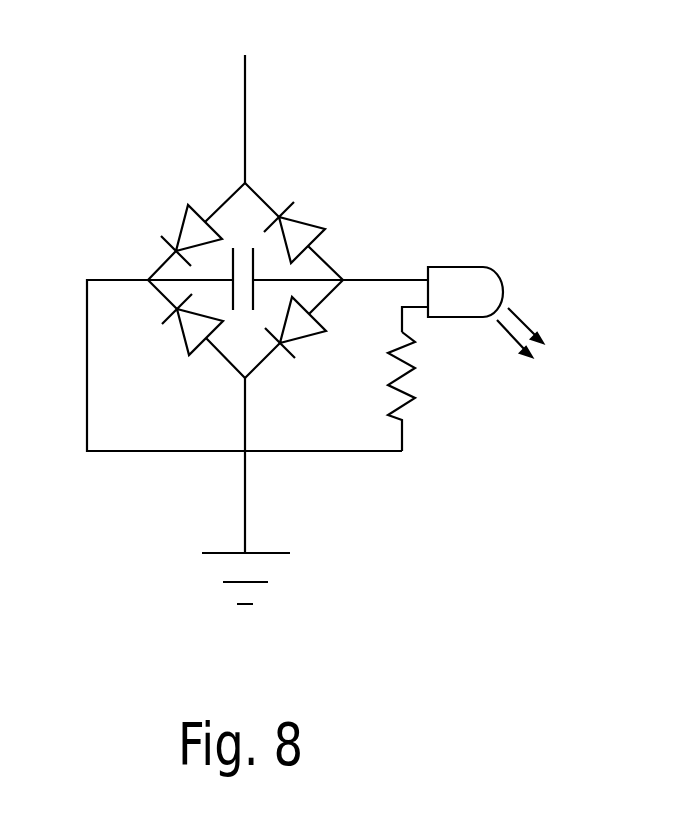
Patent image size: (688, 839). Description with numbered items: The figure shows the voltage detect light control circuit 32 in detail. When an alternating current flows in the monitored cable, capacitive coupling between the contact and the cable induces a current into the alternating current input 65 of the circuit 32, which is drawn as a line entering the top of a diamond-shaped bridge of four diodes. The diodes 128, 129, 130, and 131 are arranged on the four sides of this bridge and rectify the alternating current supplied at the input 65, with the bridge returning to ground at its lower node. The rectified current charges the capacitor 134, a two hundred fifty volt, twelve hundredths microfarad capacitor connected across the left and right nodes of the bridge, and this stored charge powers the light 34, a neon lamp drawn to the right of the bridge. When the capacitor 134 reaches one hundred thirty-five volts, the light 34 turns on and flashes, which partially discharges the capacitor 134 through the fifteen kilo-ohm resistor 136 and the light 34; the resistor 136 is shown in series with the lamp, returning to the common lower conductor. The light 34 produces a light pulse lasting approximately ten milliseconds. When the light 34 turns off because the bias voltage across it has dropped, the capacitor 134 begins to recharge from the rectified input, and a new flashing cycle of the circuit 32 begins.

The alternating current input 65 is at (249, 99).
The diode 129 is at (184, 218).
The diode 128 is at (305, 213).
The diode 131 is at (180, 342).
The diode 130 is at (302, 338).
The capacitor 134 is at (253, 265).
The light 34 is at (455, 267).
The resistor 136 is at (403, 390).
The voltage detect light control circuit 32 is at (106, 519).